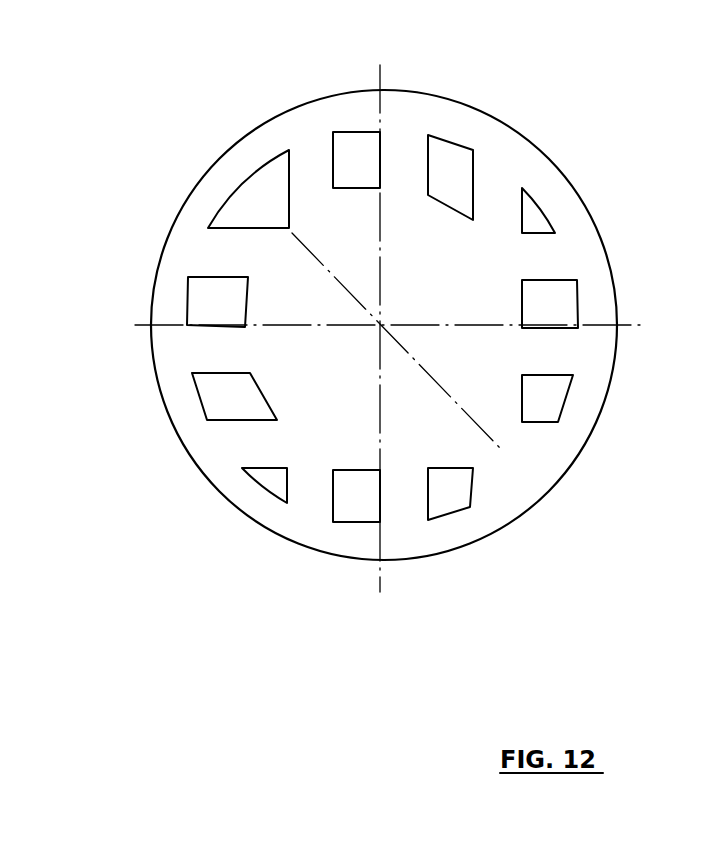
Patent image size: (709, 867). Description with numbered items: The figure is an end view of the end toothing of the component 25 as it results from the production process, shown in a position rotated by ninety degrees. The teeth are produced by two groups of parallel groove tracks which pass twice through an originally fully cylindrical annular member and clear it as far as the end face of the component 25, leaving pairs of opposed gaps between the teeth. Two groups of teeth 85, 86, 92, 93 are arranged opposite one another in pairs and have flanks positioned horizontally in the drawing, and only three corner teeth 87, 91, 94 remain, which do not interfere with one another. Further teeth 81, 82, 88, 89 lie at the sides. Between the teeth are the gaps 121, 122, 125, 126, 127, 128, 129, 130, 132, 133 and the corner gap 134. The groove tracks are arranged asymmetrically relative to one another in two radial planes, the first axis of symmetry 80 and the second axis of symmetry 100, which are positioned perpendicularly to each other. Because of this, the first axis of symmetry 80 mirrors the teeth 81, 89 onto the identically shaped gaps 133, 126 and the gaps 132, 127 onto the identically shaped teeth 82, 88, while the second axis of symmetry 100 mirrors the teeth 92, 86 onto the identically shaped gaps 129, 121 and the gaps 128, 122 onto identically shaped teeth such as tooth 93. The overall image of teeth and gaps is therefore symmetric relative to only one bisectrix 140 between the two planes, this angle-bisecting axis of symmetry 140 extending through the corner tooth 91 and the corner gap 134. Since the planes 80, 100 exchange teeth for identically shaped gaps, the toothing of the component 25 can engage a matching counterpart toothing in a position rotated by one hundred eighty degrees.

The component 25 is at (185, 198).
The first axis of symmetry 80 is at (287, 327).
The tooth 81 is at (573, 305).
The tooth 82 is at (555, 400).
The tooth 85 is at (453, 530).
The tooth 86 is at (360, 510).
The corner tooth 87 is at (275, 487).
The tooth 88 is at (220, 408).
The tooth 89 is at (192, 317).
The corner tooth 91 is at (242, 198).
The tooth 92 is at (358, 140).
The tooth 93 is at (453, 160).
The corner tooth 94 is at (540, 213).
The second axis of symmetry 100 is at (380, 220).
The gap 121 is at (405, 520).
The gap 122 is at (312, 497).
The gap 125 is at (240, 445).
The gap 126 is at (205, 360).
The gap 127 is at (207, 258).
The gap 128 is at (310, 128).
The gap 129 is at (403, 135).
The gap 130 is at (502, 193).
The gap 132 is at (558, 253).
The gap 133 is at (570, 353).
The corner gap 134 is at (518, 467).
The bisectrix 140 is at (313, 254).